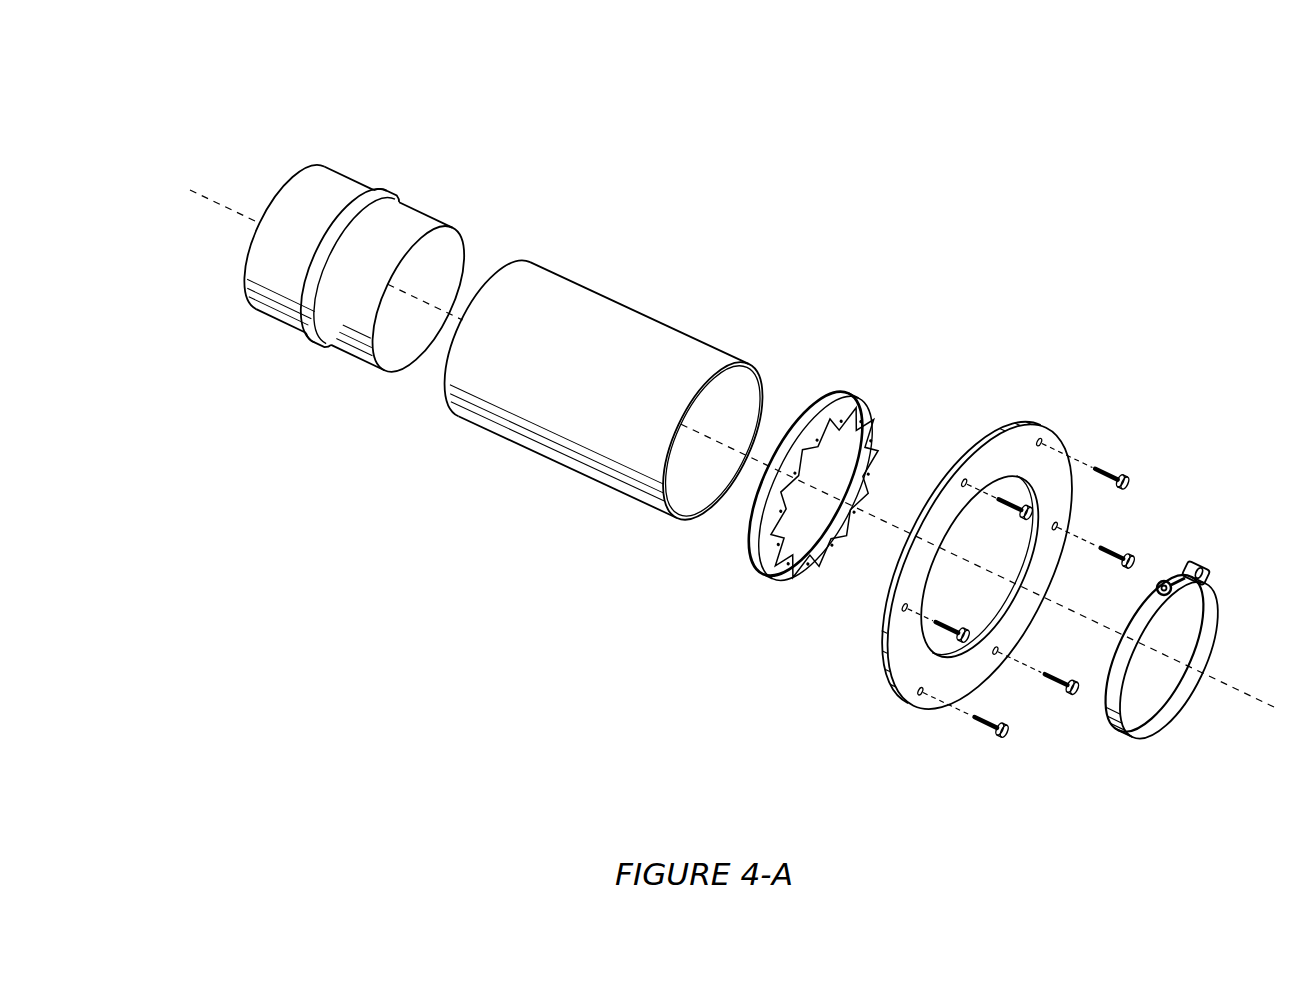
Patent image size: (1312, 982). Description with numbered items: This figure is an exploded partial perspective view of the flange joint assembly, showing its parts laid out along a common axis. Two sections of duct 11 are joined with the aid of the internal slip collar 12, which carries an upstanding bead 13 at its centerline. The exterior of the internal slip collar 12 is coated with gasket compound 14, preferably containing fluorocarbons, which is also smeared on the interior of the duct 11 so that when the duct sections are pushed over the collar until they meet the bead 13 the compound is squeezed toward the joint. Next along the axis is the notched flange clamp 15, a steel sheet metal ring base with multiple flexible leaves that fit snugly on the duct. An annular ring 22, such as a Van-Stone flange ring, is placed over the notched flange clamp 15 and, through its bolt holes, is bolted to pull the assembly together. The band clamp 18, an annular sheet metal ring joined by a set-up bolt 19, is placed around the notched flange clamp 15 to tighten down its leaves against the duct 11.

The duct 11 is at (627, 308).
The internal slip collar 12 is at (333, 172).
The bead 13 is at (314, 345).
The gasket compound 14 is at (232, 358).
The notched flange clamp 15 is at (878, 443).
The band clamp 18 is at (1135, 742).
The set-up bolt 19 is at (1168, 577).
The annular ring 22 is at (1113, 373).